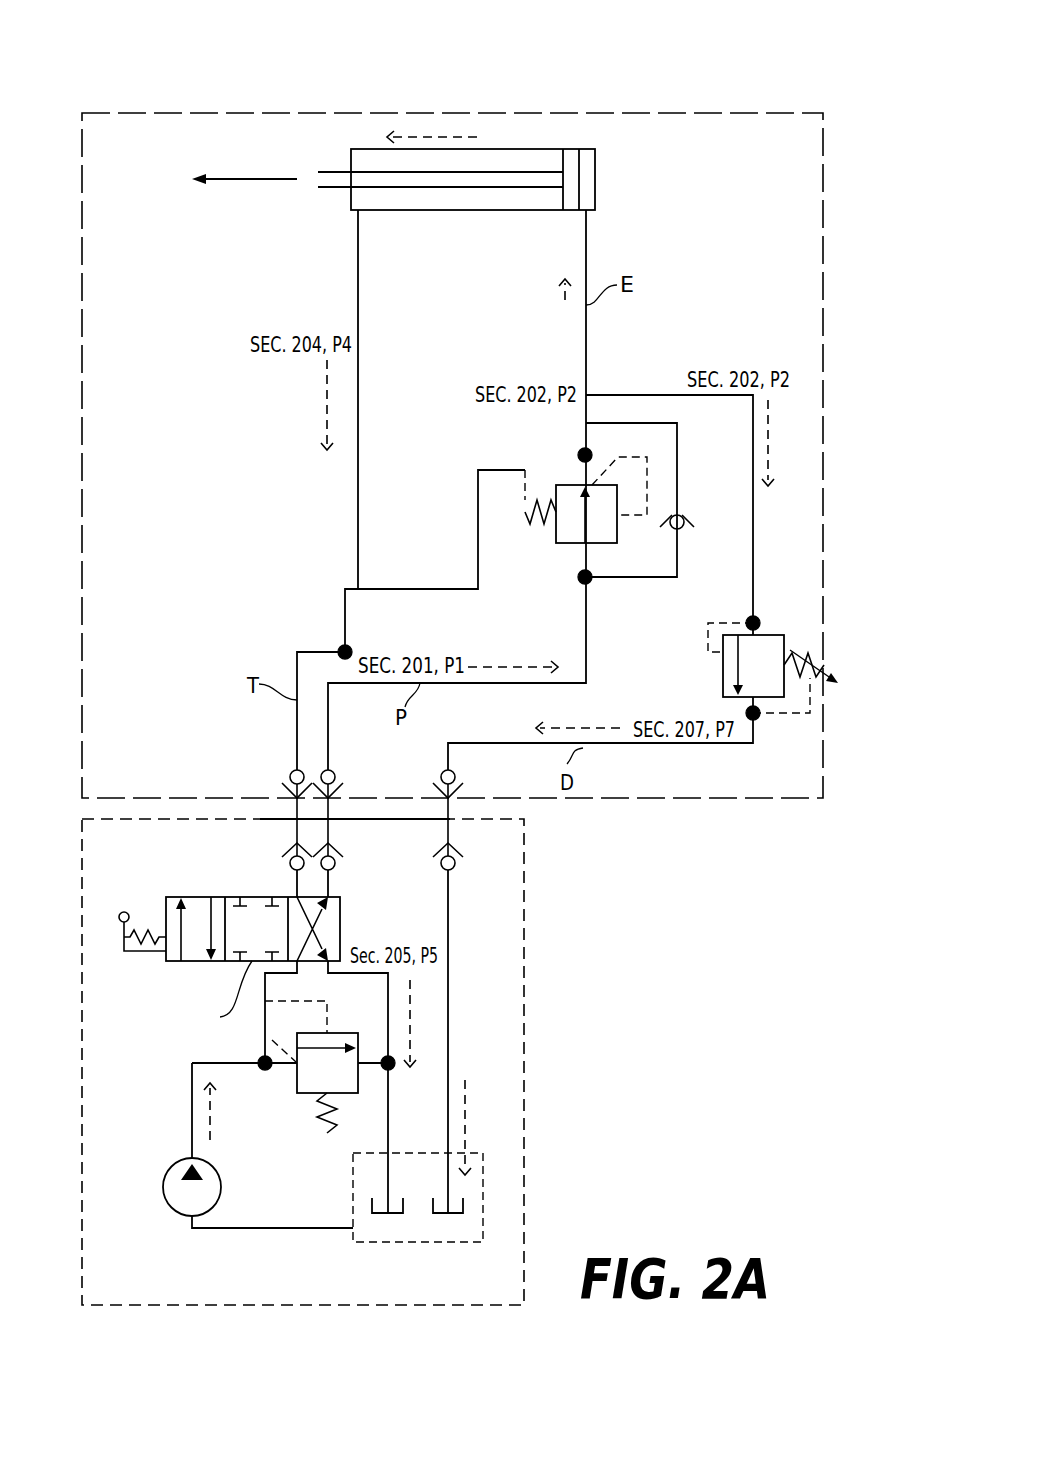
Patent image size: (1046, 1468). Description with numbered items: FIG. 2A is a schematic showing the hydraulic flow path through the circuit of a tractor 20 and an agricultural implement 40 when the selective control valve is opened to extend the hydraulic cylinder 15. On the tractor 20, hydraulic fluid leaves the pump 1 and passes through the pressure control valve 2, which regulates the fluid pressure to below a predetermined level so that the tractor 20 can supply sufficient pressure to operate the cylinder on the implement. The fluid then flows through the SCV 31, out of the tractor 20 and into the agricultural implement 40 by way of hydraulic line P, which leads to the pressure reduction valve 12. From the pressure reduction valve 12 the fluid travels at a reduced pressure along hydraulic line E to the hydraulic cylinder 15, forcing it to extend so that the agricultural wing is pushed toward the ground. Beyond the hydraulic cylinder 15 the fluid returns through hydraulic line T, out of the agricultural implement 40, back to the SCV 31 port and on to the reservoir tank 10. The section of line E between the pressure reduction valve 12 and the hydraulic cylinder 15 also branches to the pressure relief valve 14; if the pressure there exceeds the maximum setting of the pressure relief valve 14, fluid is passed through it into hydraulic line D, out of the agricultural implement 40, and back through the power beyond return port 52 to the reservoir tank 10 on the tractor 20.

The agricultural implement 40 is at (622, 113).
The hydraulic cylinder 15 is at (478, 212).
The pressure reduction valve 12 is at (562, 485).
The pressure relief valve 14 is at (723, 680).
The power beyond return port 52 is at (448, 832).
The tractor 20 is at (82, 1255).
The SCV 31 is at (228, 961).
The pressure control valve 2 is at (297, 1078).
The pump 1 is at (163, 1190).
The reservoir tank 10 is at (484, 1207).